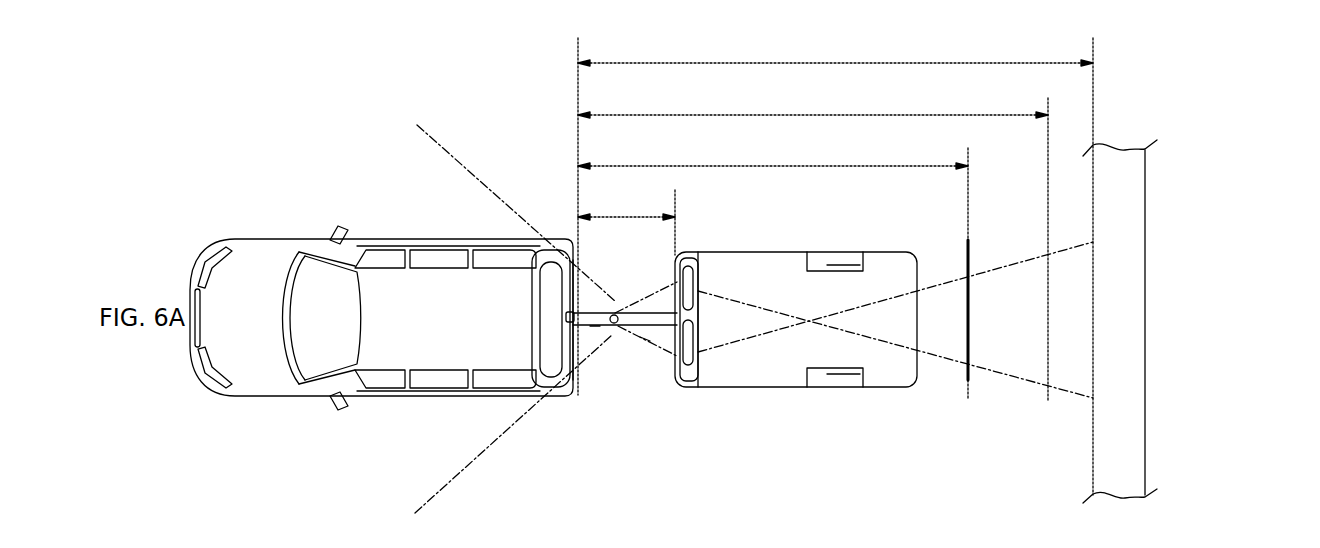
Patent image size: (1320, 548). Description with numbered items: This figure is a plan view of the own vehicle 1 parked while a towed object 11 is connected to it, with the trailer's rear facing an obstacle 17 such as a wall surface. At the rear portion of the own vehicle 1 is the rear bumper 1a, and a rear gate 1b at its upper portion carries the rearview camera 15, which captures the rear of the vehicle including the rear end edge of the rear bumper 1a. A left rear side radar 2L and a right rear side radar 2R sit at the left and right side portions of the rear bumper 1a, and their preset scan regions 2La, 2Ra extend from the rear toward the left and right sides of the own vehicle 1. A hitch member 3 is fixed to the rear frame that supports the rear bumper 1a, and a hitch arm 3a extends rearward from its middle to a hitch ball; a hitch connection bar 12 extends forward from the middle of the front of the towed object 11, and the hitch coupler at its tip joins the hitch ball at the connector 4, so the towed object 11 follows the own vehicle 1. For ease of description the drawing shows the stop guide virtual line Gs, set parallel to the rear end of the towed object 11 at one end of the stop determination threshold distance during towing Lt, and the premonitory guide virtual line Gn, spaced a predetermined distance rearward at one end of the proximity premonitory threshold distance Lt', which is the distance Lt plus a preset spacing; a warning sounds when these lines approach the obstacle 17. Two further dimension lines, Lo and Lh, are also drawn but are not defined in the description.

The own vehicle 1 is at (289, 235).
The rear bumper 1a is at (576, 332).
The rear gate 1b is at (557, 337).
The right rear side radar 2R is at (577, 262).
The scan region 2Ra is at (468, 181).
The left rear side radar 2L is at (572, 378).
The scan region 2La is at (426, 490).
The hitch member 3 is at (590, 300).
The hitch arm 3a is at (598, 326).
The connector 4 is at (614, 313).
The towed object 11 is at (745, 389).
The hitch connection bar 12 is at (640, 337).
The rearview camera 15 is at (570, 316).
The obstacle 17 is at (1145, 326).
The stop guide virtual line Gs is at (968, 380).
The premonitory guide virtual line Gn is at (1049, 346).
The overall length dimension Lo is at (835, 52).
The proximity premonitory threshold distance Lt' is at (813, 104).
The stop determination threshold distance during towing Lt is at (773, 156).
The hitch length dimension Lh is at (626, 206).